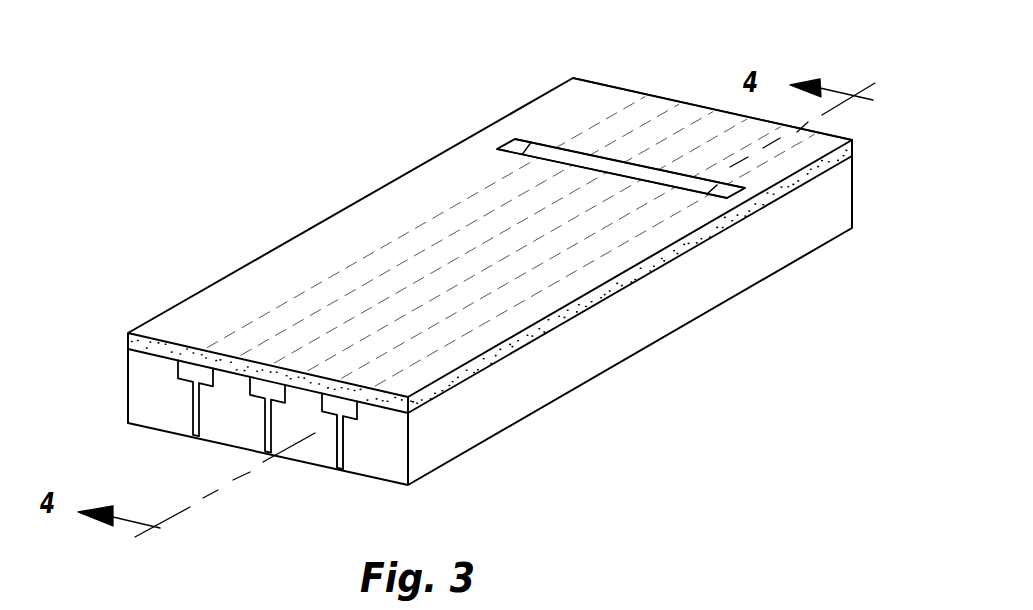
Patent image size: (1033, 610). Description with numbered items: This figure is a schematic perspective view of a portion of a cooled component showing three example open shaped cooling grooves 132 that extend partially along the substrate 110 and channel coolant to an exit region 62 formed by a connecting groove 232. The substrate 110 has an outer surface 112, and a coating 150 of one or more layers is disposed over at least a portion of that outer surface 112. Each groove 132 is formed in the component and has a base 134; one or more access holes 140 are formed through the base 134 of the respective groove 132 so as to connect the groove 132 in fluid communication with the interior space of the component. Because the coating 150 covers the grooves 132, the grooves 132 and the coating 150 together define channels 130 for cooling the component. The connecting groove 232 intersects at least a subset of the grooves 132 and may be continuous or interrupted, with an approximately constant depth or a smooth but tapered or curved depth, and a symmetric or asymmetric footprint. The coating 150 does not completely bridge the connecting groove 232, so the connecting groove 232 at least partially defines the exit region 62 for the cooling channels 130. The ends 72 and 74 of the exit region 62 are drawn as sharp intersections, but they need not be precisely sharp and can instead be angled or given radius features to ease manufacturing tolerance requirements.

The substrate 110 is at (655, 328).
The outer surface 112 is at (425, 403).
The coating 150 is at (608, 105).
The connecting groove 232 is at (584, 160).
The exit region 62 is at (655, 180).
The end of the exit region 72 is at (512, 142).
The end of the exit region 74 is at (733, 186).
The channel 130 is at (192, 381).
The groove 132 is at (173, 465).
The base 134 is at (349, 416).
The access hole 140 is at (338, 460).